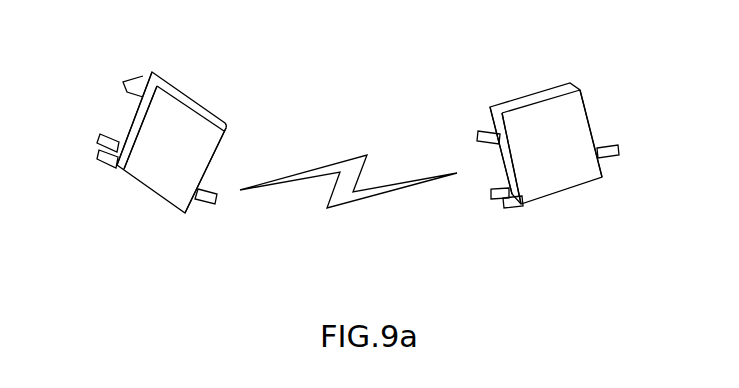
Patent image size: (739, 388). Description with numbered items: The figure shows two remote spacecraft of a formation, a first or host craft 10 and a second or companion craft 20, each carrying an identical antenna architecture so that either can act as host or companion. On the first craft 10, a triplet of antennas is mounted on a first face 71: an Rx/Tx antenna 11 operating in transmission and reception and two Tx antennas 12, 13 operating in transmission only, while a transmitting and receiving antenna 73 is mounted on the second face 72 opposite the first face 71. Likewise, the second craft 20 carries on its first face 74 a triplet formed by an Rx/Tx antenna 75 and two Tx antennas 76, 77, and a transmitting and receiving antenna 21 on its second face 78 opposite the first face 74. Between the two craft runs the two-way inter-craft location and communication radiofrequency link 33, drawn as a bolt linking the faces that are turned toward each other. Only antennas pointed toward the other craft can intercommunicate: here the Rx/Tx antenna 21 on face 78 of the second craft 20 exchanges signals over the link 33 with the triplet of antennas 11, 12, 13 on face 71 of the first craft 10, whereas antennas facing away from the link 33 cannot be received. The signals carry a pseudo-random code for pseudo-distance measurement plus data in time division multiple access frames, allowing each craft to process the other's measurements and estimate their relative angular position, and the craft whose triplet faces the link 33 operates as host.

The host craft 10 is at (538, 91).
The Rx/Tx antenna 11 is at (492, 196).
The Tx antenna 12 is at (510, 207).
The Tx antenna 13 is at (482, 131).
The companion craft 20 is at (198, 103).
The transmitting and receiving antenna 21 is at (197, 204).
The inter-craft location and communication radiofrequency link 33 is at (337, 208).
The first face 71 is at (504, 167).
The second face 72 is at (588, 122).
The transmitting and receiving antenna 73 is at (612, 159).
The first face 74 is at (127, 127).
The Rx/Tx antenna 75 is at (98, 139).
The Tx antenna 76 is at (99, 161).
The Tx antenna 77 is at (141, 74).
The second face 78 is at (212, 156).